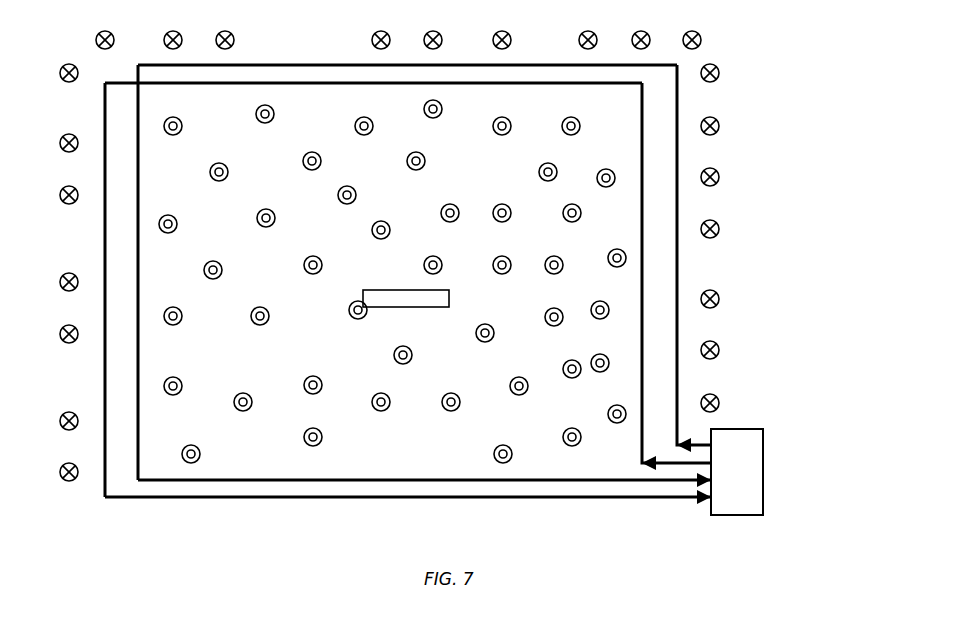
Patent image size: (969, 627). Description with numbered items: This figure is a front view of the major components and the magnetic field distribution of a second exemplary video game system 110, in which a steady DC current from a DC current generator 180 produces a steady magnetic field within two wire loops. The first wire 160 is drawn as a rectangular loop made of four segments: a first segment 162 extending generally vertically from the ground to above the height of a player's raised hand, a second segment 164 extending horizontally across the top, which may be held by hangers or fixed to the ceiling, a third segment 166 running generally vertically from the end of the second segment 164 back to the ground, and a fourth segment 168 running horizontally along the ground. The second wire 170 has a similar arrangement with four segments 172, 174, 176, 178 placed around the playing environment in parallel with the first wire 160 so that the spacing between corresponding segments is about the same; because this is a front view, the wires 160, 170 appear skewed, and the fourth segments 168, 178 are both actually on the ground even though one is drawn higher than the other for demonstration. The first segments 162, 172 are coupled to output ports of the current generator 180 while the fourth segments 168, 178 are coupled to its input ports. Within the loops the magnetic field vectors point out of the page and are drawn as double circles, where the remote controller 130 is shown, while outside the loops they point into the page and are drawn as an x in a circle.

The video game system 110 is at (724, 101).
The remote controller 130 is at (407, 290).
The first wire 160 is at (677, 168).
The first segment 162 is at (683, 285).
The second segment 164 is at (460, 65).
The third segment 166 is at (138, 238).
The fourth segment 168 is at (358, 478).
The second wire 170 is at (642, 203).
The first segment 172 is at (642, 323).
The second segment 174 is at (255, 85).
The third segment 176 is at (103, 375).
The fourth segment 178 is at (218, 498).
The DC current generator 180 is at (722, 429).